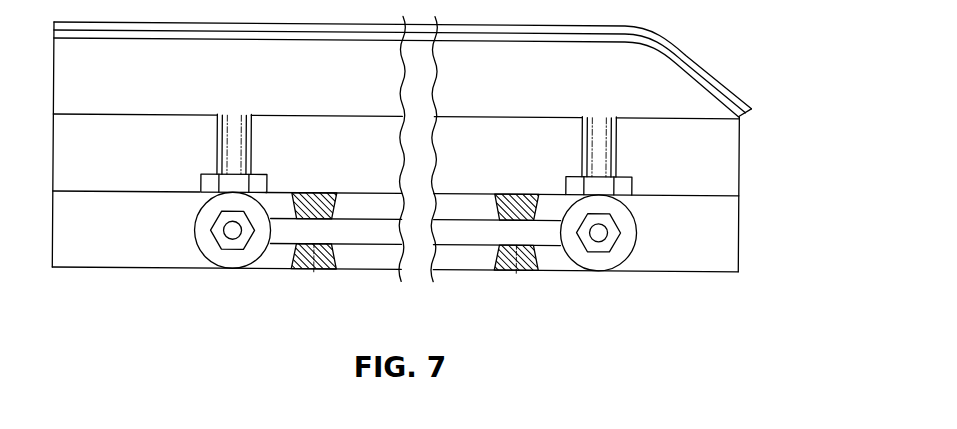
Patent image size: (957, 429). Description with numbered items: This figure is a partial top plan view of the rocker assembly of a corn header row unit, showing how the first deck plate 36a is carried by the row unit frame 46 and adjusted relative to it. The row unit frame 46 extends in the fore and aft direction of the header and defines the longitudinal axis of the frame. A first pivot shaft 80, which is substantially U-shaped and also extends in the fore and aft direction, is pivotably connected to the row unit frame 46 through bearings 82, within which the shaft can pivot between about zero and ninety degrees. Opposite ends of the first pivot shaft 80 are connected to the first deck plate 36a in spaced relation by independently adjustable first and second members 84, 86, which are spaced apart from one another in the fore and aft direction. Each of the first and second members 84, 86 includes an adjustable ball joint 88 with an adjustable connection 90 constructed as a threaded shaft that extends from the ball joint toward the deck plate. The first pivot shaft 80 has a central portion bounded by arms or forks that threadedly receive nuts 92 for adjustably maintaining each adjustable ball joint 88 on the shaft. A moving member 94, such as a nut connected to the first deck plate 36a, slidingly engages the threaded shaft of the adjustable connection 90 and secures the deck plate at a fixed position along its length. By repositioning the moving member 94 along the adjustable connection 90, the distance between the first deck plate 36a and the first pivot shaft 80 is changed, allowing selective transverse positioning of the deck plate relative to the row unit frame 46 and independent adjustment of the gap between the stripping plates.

The first deck plate 36a is at (672, 30).
The row unit frame 46 is at (741, 238).
The first pivot shaft 80 is at (455, 232).
The bearings 82 is at (313, 268).
The first member 84 is at (642, 227).
The second member 86 is at (193, 221).
The adjustable ball joint 88 is at (210, 240).
The adjustable connection 90 is at (220, 160).
The nuts 92 is at (233, 251).
The moving member 94 is at (257, 172).